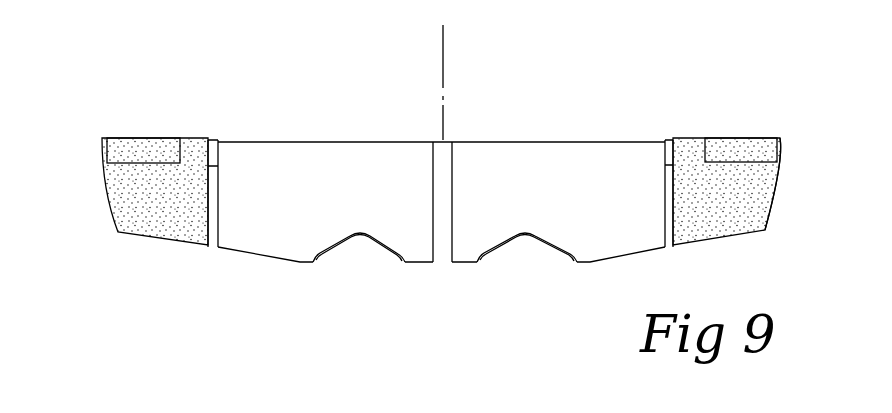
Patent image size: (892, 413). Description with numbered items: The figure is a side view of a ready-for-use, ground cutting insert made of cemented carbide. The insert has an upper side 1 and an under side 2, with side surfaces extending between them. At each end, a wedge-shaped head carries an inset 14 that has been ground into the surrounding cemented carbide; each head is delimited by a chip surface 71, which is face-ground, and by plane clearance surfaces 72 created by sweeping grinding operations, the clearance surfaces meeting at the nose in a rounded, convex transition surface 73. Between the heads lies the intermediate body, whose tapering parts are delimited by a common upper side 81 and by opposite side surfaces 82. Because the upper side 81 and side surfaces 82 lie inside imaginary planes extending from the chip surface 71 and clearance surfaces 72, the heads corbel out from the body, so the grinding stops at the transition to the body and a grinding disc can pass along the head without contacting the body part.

The upper side 1 is at (481, 130).
The under side 2 is at (445, 268).
The inset 14 is at (126, 150).
The chip surface 71 is at (149, 138).
The clearance surface 72 is at (138, 208).
The transition surface 73 is at (780, 150).
The upper side of body parts 81 is at (555, 142).
The side surfaces 82 is at (346, 207).